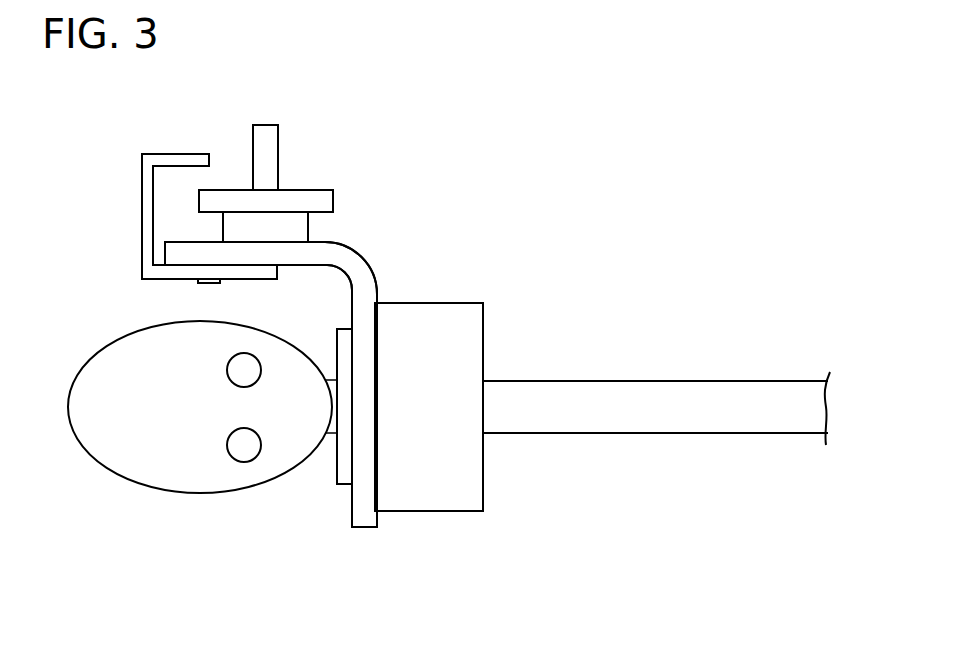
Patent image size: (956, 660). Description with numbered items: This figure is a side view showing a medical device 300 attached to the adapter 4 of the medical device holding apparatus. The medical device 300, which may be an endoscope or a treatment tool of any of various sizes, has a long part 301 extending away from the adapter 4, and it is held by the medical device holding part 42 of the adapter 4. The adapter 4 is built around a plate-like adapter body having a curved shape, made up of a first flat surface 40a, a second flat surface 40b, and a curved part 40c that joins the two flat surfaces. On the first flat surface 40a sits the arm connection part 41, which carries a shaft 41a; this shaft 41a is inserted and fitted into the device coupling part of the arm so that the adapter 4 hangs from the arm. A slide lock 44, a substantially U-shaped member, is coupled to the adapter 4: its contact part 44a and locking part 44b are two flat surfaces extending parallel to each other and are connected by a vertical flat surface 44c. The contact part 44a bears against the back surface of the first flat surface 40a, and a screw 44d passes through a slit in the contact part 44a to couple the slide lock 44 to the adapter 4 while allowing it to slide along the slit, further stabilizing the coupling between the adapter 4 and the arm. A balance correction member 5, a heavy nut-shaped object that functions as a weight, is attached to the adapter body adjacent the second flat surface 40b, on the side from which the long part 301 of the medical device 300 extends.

The adapter 4 is at (388, 245).
The balance correction member 5 is at (443, 503).
The first flat surface 40a is at (325, 240).
The second flat surface 40b is at (355, 517).
The curved part 40c is at (371, 271).
The arm connection part 41 is at (303, 200).
The shaft 41a is at (279, 143).
The medical device holding part 42 is at (337, 475).
The slide lock 44 is at (138, 215).
The contact part 44a is at (167, 275).
The locking part 44b is at (182, 153).
The vertical flat surface 44c is at (148, 245).
The screw 44d is at (212, 283).
The medical device 300 is at (129, 480).
The long part 301 is at (613, 422).